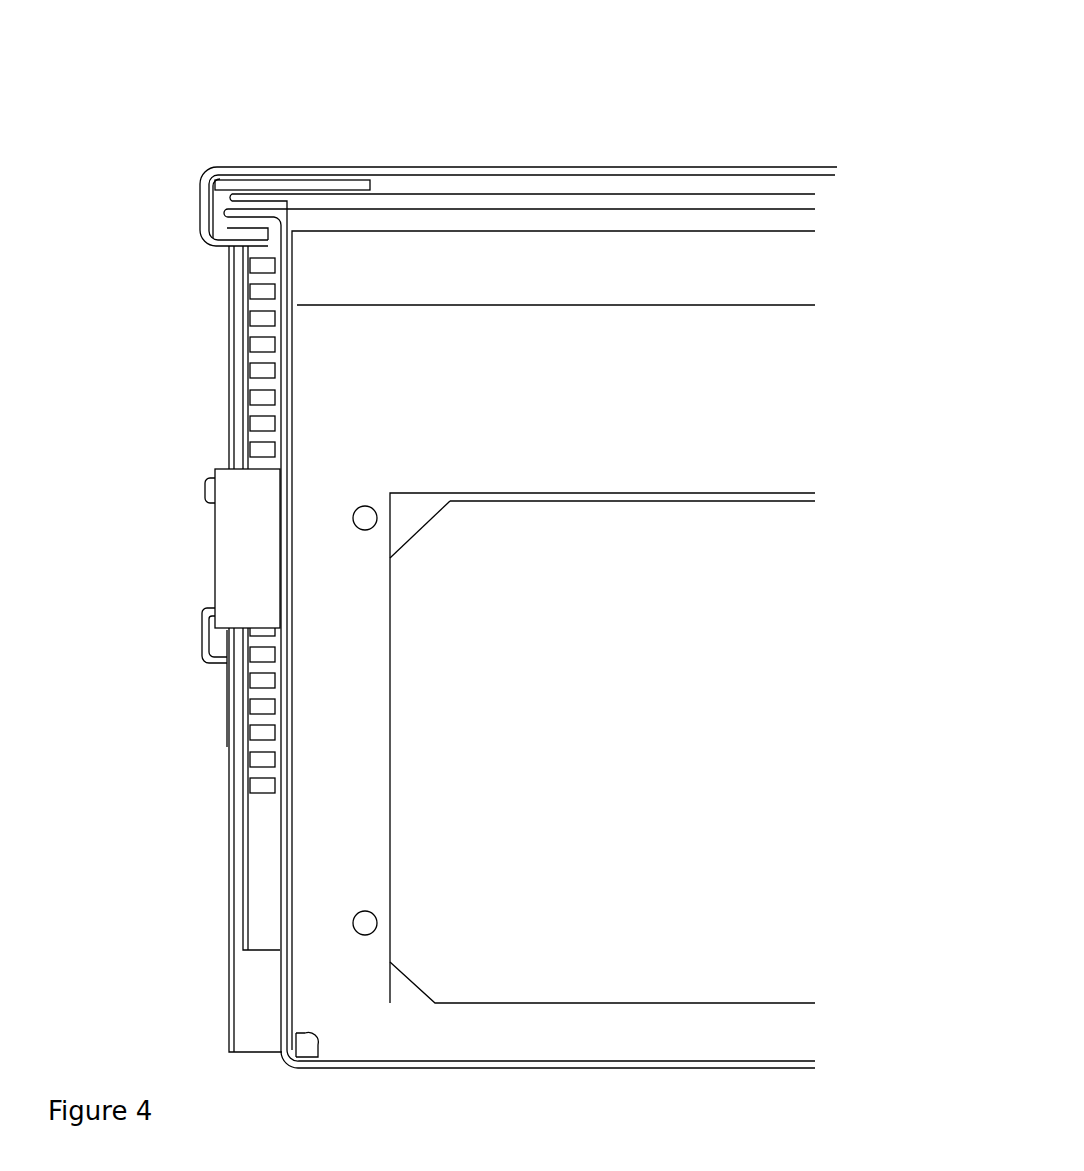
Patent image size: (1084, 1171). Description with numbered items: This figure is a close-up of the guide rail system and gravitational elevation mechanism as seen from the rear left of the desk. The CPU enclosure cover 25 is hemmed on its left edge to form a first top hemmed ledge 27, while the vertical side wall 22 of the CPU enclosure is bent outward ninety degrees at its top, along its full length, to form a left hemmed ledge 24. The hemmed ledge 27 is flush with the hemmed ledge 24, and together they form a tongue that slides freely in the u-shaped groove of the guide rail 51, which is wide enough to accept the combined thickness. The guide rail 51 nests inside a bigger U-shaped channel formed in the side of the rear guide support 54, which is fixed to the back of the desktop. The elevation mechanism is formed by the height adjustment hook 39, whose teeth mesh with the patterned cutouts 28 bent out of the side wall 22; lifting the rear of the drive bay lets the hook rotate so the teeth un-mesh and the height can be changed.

The rear guide support 54 is at (199, 191).
The guide rail 51 is at (211, 208).
The first top hemmed ledge 27 is at (228, 203).
The CPU enclosure cover 25 is at (533, 205).
The left hemmed ledge 24 is at (213, 248).
The right vertical wall 22 is at (283, 283).
The patterned cutouts 28 is at (260, 371).
The height adjustment hook 39 is at (245, 510).